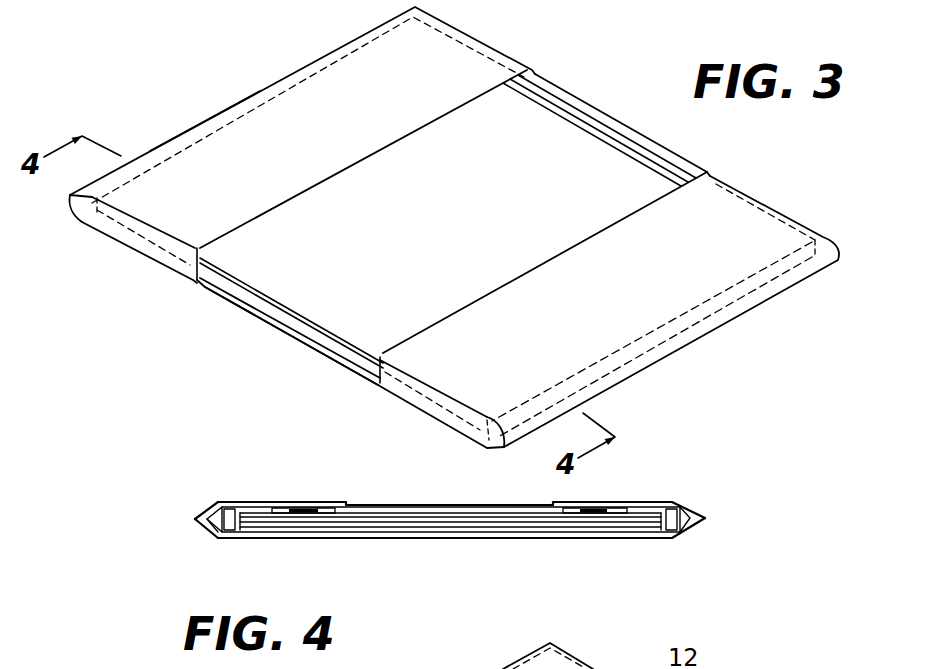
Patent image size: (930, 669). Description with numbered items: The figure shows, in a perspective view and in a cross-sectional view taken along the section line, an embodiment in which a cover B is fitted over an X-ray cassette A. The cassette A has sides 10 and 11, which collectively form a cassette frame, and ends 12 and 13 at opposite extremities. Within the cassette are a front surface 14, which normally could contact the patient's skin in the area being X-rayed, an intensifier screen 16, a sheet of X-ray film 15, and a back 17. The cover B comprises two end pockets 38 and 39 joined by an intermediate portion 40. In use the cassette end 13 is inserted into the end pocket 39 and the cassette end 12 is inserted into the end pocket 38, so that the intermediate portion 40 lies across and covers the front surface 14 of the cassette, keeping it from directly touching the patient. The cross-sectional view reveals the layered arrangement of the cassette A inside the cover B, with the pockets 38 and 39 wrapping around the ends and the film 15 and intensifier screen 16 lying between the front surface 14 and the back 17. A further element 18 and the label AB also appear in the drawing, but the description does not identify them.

In FIG. 3, the side 10 is at (329, 343).
In FIG. 4, the side 10 is at (284, 514).
In FIG. 3, the side 11 is at (581, 100).
In FIG. 3, the end 12 is at (205, 130).
In FIG. 3, the end 13 is at (718, 312).
In FIG. 4, the front surface 14 is at (460, 533).
In FIG. 4, the sheet of X-ray film 15 is at (414, 528).
In FIG. 4, the intensifier screen 16 is at (382, 524).
In FIG. 3, the back 17 is at (446, 235).
In FIG. 4, the back 17 is at (481, 514).
In FIG. 4, the rail 18 is at (608, 508).
In FIG. 3, the end pocket 38 is at (298, 94).
In FIG. 4, the end pocket 38 is at (213, 502).
In FIG. 3, the end pocket 39 is at (757, 228).
In FIG. 4, the end pocket 39 is at (689, 502).
In FIG. 3, the intermediate portion 40 is at (283, 334).
In FIG. 4, the intermediate portion 40 is at (550, 539).
In FIG. 3, the X-ray cassette A is at (270, 310).
In FIG. 4, the X-ray cassette A is at (371, 503).
In FIG. 3, the cover B is at (380, 393).
In FIG. 4, the cover B is at (204, 534).
In FIG. 3, the edge AB is at (458, 28).